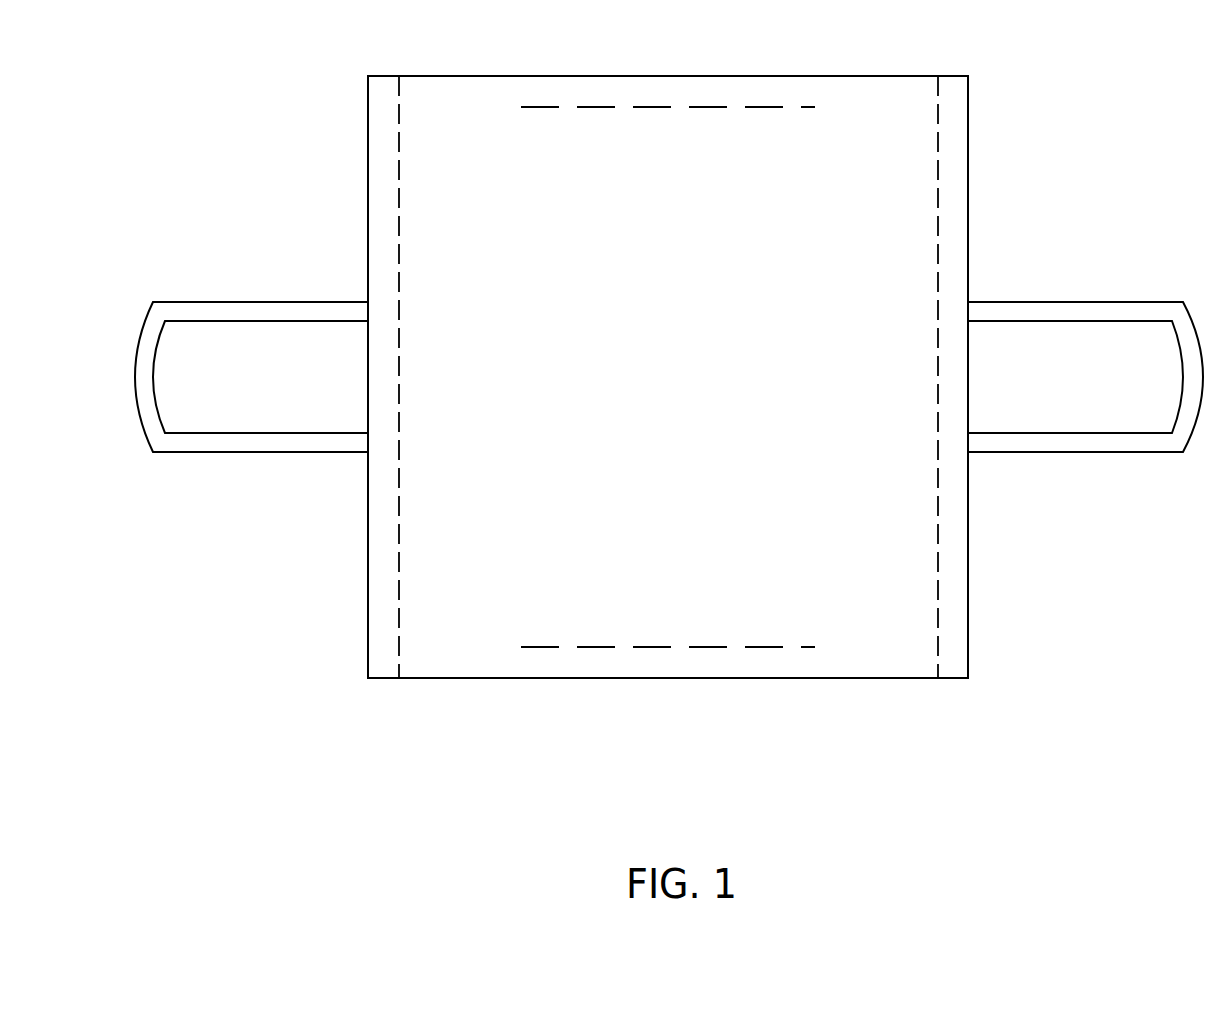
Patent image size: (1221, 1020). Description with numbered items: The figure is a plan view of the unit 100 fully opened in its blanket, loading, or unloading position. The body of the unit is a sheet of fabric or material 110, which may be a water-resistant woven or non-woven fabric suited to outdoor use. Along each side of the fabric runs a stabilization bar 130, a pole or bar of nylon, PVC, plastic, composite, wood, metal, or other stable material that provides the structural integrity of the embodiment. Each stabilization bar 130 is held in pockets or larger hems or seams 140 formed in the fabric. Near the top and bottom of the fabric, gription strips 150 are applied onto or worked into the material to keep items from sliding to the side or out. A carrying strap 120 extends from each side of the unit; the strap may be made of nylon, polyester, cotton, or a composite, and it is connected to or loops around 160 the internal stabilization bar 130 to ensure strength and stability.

The unit 100 is at (325, 208).
The fabric or material 110 is at (913, 185).
The strap 120 is at (246, 311).
The stabilization bar 130 is at (955, 218).
The pockets or larger hems or seams 140 is at (938, 198).
The gription strips 150 is at (688, 107).
The loop around 160 is at (367, 311).